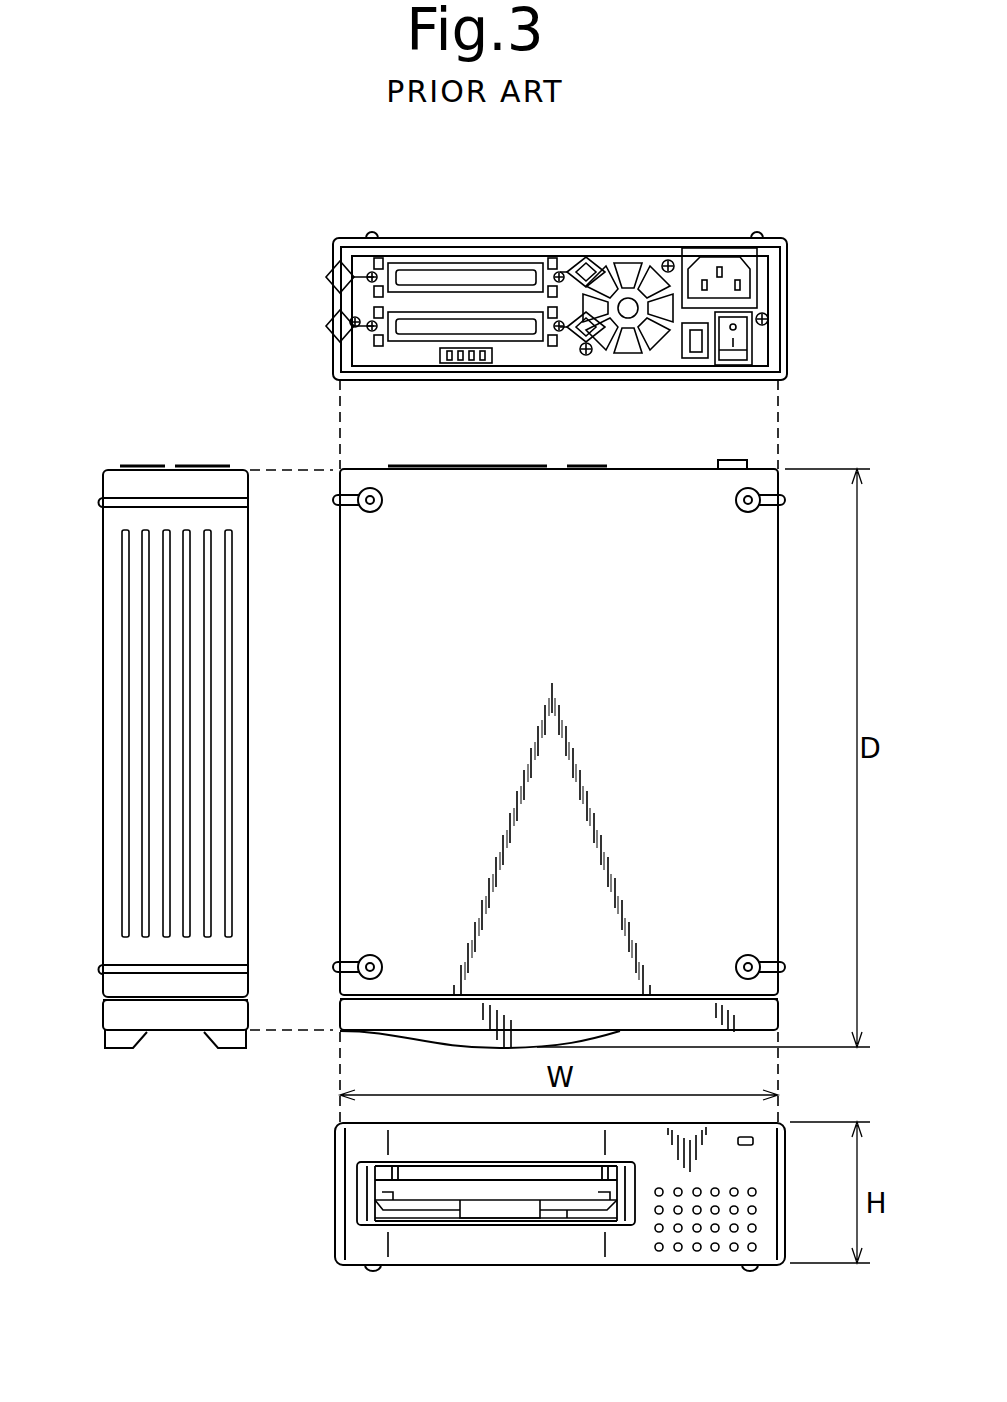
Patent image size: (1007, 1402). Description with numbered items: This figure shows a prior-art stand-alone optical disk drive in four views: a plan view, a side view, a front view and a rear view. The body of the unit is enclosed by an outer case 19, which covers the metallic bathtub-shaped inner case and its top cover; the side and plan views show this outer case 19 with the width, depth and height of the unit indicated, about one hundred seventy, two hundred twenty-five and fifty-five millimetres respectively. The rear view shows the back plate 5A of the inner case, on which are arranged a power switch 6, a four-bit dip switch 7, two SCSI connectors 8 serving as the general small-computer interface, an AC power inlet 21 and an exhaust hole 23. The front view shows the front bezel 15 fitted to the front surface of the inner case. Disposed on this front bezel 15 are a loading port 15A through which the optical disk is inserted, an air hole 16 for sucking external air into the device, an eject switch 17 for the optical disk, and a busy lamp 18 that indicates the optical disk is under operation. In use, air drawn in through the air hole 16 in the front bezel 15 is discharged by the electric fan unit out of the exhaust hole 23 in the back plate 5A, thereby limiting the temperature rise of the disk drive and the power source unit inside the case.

The back plate 5A is at (638, 469).
The power switch 6 is at (742, 352).
The 4-bit dip switch 7 is at (440, 358).
The SCSI connectors 8 is at (487, 327).
The front bezel 15 is at (177, 1025).
The loading port 15A is at (490, 1190).
The air hole 16 is at (678, 1250).
The eject switch 17 is at (583, 1216).
The busy lamp 18 is at (755, 1141).
The outer case 19 is at (113, 843).
The AC power inlet 21 is at (696, 256).
The exhaust hole 23 is at (602, 270).